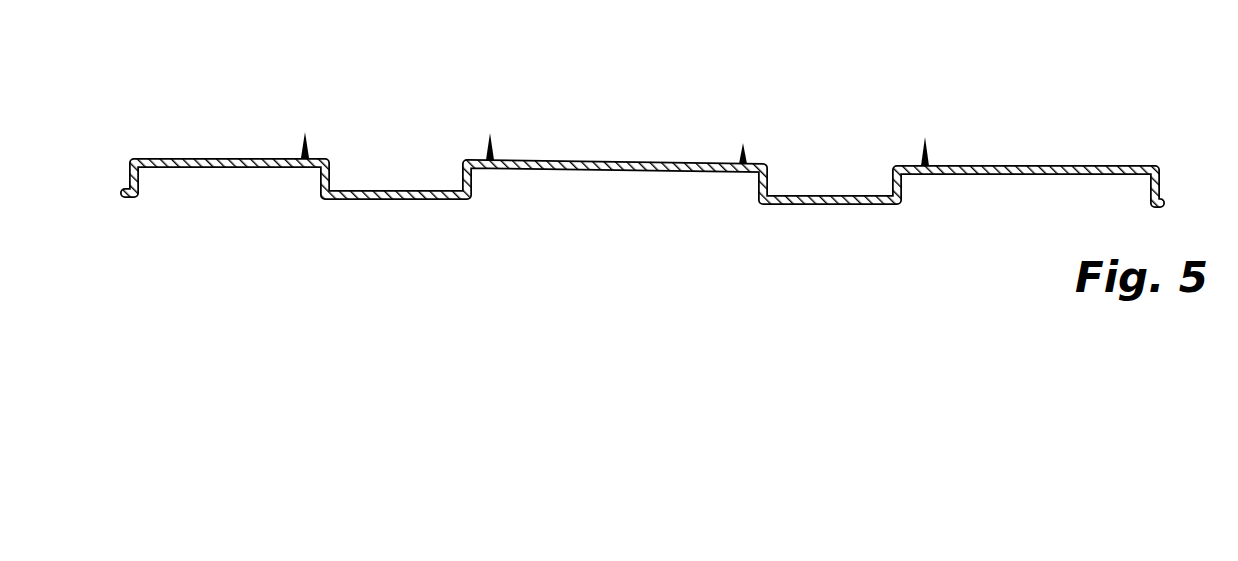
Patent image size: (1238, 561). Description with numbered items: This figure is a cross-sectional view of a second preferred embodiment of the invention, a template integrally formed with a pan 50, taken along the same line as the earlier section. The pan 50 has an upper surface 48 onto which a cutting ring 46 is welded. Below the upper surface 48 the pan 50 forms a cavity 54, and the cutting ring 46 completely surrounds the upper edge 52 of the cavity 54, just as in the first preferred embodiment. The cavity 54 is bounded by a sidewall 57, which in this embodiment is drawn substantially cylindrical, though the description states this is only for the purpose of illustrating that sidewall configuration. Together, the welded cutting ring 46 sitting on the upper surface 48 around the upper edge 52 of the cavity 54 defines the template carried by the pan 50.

The cutting ring 46 is at (493, 146).
The upper surface 48 is at (226, 160).
The pan 50 is at (893, 211).
The upper edge 52 is at (325, 160).
The cavity 54 is at (405, 190).
The sidewall 57 is at (772, 185).